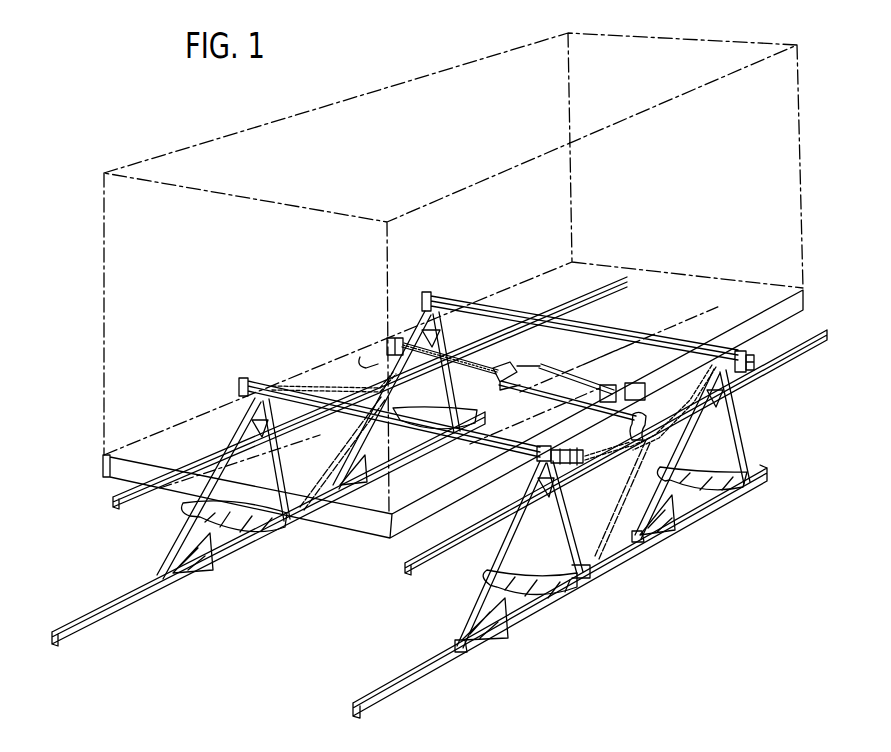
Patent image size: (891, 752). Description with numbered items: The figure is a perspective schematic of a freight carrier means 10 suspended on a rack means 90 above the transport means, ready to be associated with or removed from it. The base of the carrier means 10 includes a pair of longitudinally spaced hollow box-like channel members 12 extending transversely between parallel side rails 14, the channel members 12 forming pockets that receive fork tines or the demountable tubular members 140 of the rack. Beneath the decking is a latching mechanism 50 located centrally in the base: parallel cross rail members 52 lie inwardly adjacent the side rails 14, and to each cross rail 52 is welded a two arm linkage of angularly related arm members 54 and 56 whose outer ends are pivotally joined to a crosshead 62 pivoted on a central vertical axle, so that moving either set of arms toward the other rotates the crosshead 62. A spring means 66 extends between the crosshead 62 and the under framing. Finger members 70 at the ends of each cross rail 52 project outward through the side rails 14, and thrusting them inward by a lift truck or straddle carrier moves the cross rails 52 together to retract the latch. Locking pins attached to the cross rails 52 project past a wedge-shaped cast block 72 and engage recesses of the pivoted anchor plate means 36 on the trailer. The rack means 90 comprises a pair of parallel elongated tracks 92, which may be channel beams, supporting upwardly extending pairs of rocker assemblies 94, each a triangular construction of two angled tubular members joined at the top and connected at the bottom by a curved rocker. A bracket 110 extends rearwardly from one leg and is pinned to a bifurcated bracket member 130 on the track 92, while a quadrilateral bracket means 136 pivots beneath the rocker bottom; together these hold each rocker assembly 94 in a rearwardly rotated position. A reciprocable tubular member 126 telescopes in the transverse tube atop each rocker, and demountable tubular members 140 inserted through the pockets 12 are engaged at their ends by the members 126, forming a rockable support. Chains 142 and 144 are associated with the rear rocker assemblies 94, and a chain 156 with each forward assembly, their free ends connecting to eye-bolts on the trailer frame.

The freight carrier means 10 is at (808, 185).
The hollow box-like channel members 12 is at (663, 333).
The side rails 14 is at (100, 472).
The anchor plate means 36 is at (635, 441).
The latching mechanism 50 is at (523, 364).
The cross rail members 52 is at (368, 362).
The arm member 54 is at (437, 368).
The arm member 56 is at (503, 362).
The crosshead 62 is at (513, 382).
The spring means 66 is at (598, 382).
The finger members 70 is at (667, 377).
The wedge-shaped cast block 72 is at (640, 386).
The rack means 90 is at (315, 543).
The elongated tracks 92 is at (138, 600).
The rocker assemblies 94 is at (490, 545).
The bracket 110 is at (573, 565).
The reciprocable tubular member 126 is at (748, 374).
The bifurcated bracket member 130 is at (587, 573).
The bracket means 136 is at (490, 623).
The demountable tubular members 140 is at (597, 330).
The chain 142 is at (683, 420).
The chain 144 is at (660, 520).
The chain 156 is at (603, 468).